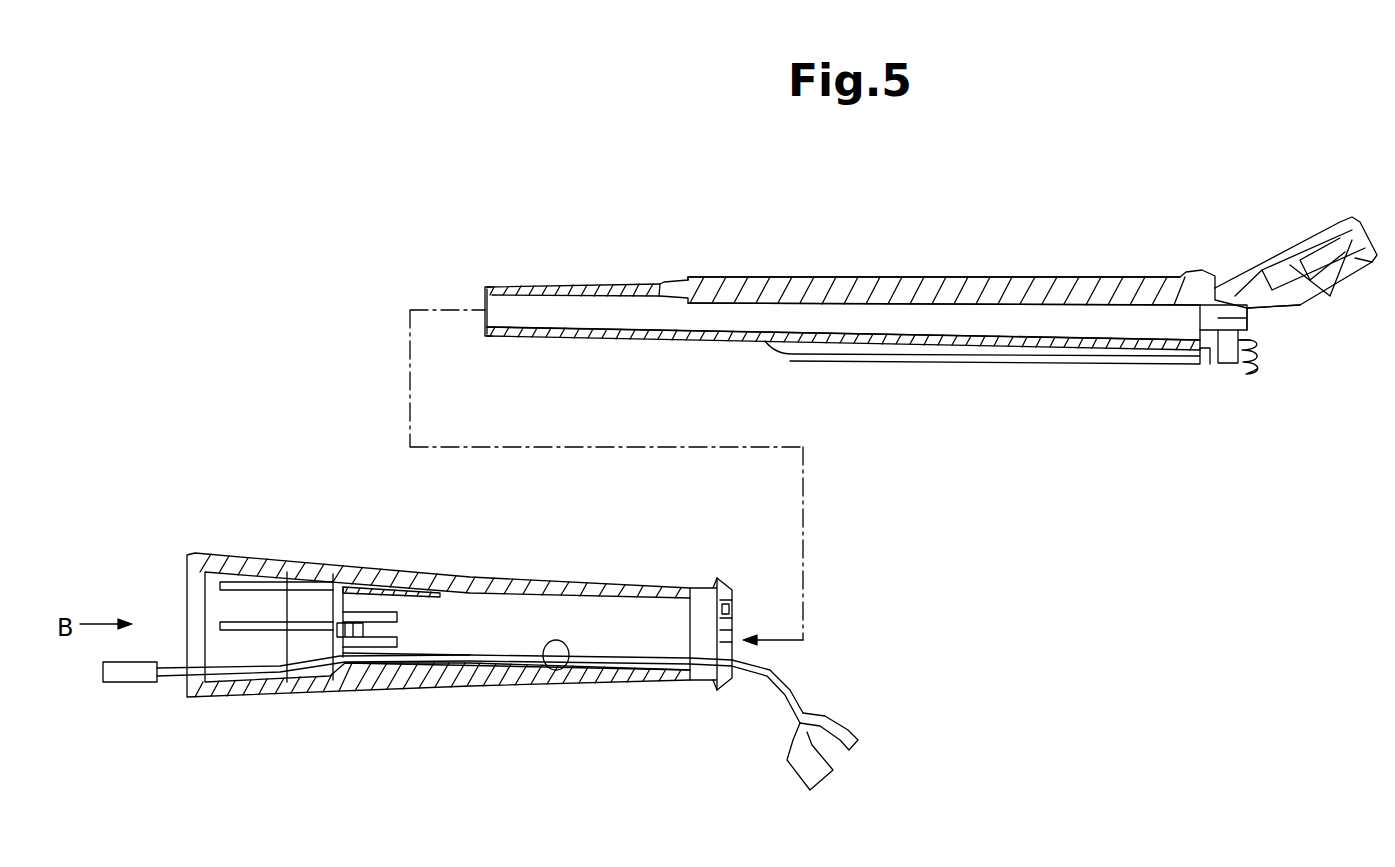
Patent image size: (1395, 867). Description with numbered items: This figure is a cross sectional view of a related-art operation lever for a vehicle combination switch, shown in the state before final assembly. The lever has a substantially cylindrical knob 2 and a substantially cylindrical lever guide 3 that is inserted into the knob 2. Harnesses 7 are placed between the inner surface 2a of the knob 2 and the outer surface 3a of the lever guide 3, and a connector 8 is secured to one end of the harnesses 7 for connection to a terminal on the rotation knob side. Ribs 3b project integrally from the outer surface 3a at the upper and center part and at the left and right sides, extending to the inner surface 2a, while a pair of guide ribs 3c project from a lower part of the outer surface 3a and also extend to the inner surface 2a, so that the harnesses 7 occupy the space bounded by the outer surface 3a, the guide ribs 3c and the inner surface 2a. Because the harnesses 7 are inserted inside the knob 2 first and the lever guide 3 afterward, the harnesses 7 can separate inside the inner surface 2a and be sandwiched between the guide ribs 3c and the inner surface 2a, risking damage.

The knob 2 is at (508, 578).
The inner surface of the knob 2a is at (566, 670).
The lever guide 3 is at (603, 283).
The outer surface of the lever guide 3a is at (940, 345).
The ribs 3b is at (890, 282).
The guide ribs 3c is at (1078, 362).
The harnesses 7 is at (650, 665).
The connector 8 is at (128, 682).